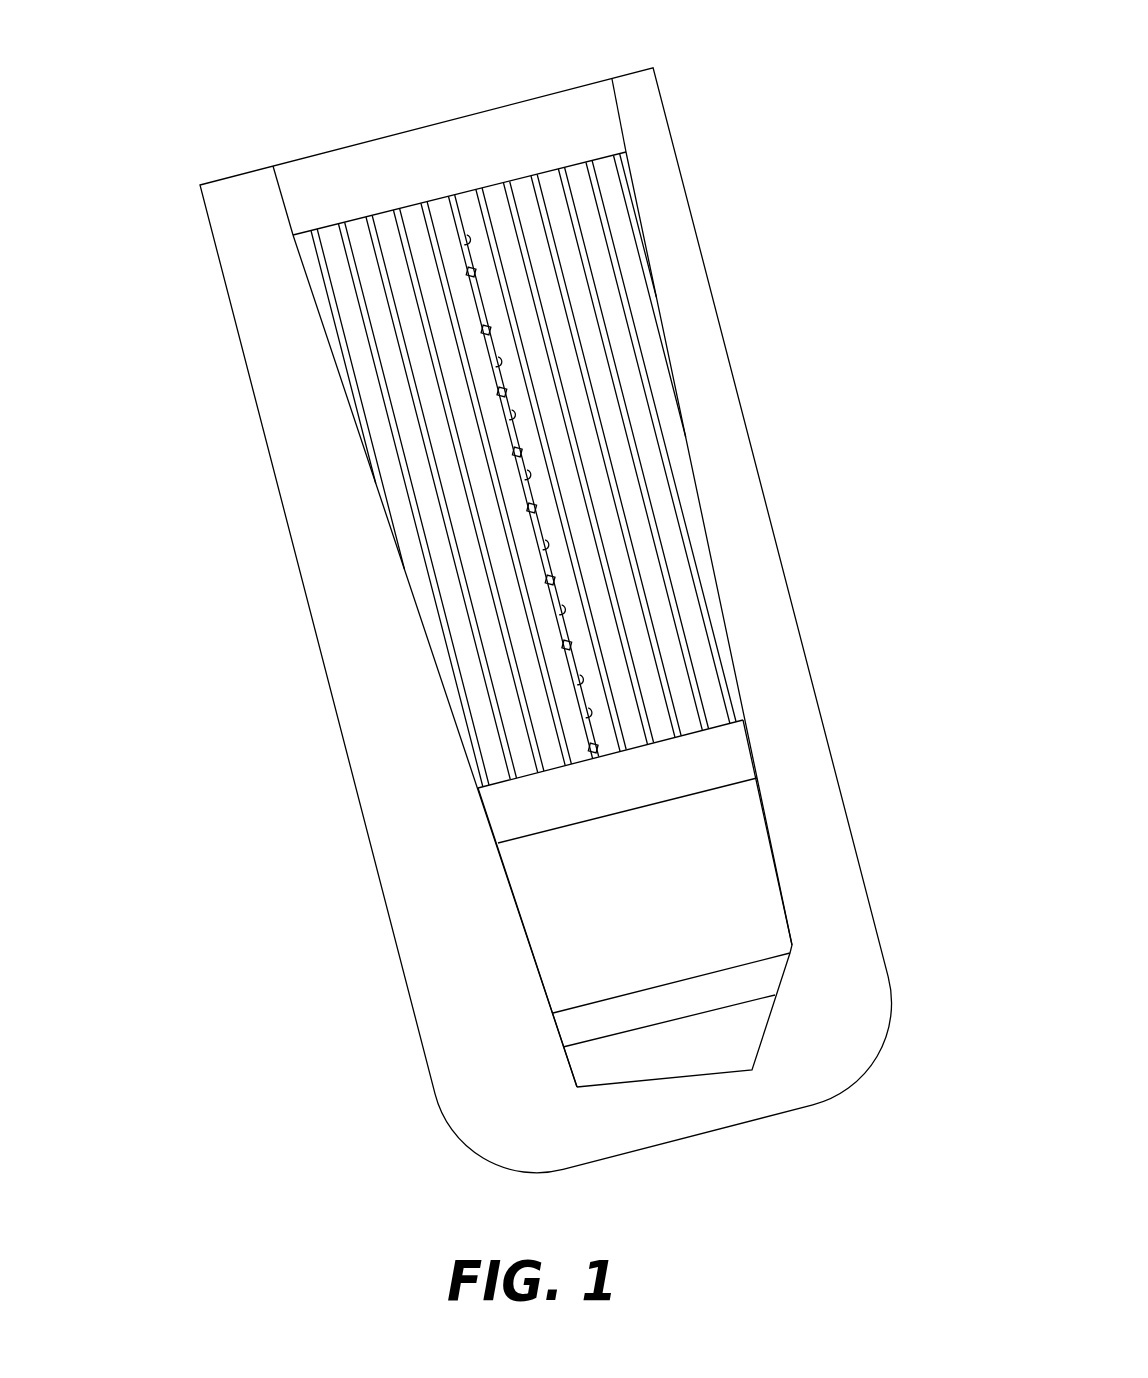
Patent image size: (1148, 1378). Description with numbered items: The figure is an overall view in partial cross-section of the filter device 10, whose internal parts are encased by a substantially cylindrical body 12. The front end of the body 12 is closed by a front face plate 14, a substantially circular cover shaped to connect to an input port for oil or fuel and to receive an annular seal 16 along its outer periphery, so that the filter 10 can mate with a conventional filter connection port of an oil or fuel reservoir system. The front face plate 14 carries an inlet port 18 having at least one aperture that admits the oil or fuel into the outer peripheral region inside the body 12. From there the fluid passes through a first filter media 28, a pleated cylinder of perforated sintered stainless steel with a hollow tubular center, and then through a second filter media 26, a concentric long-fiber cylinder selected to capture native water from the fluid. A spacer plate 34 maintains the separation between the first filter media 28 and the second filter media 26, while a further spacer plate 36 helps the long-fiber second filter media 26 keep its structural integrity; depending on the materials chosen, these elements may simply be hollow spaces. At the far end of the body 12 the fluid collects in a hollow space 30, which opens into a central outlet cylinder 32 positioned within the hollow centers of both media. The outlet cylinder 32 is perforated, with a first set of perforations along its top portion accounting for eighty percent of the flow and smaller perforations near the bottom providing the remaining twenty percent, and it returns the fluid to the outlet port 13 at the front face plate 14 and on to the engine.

The filter device 10 is at (112, 57).
The cylindrical body 12 is at (853, 1070).
The outlet port 13 is at (465, 114).
The front face plate 14 is at (332, 199).
The annular seal 16 is at (198, 190).
The inlet port 18 is at (580, 94).
The second filter media 26 is at (740, 874).
The first filter media 28 is at (632, 544).
The hollow space 30 is at (684, 1052).
The outlet cylinder 32 is at (514, 389).
The spacer plate 34 is at (508, 806).
The spacer plate 36 is at (580, 1028).